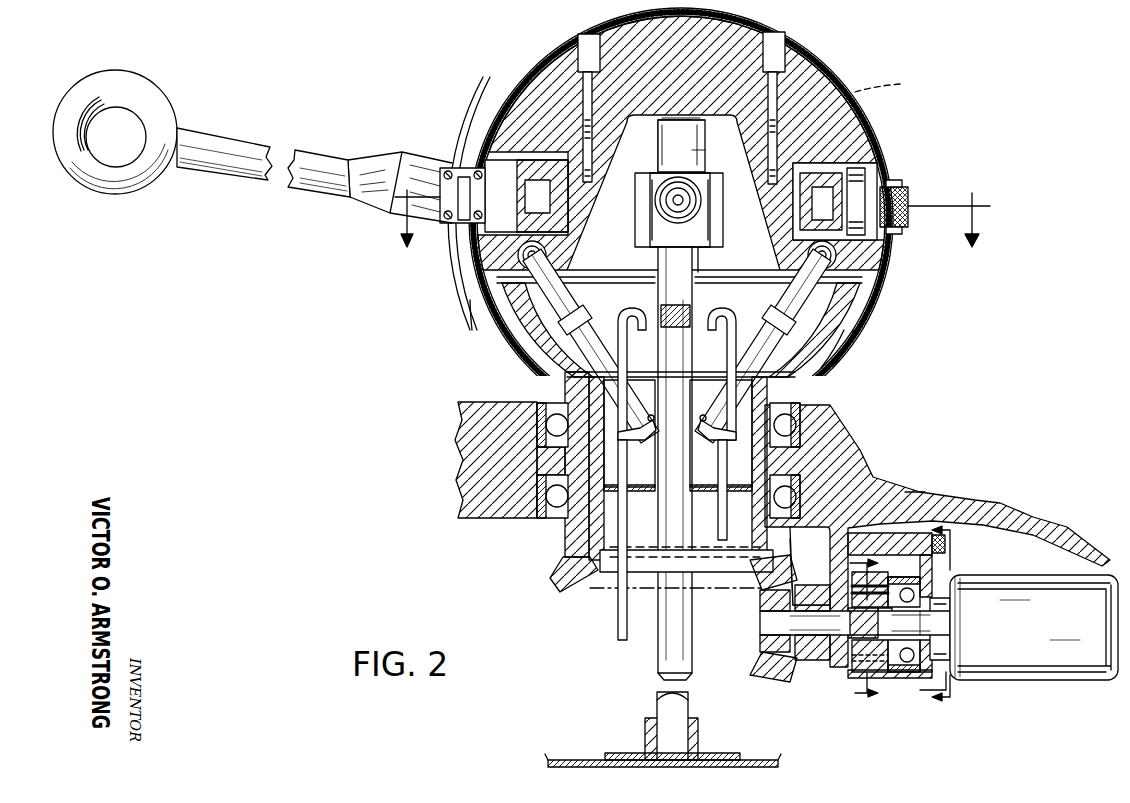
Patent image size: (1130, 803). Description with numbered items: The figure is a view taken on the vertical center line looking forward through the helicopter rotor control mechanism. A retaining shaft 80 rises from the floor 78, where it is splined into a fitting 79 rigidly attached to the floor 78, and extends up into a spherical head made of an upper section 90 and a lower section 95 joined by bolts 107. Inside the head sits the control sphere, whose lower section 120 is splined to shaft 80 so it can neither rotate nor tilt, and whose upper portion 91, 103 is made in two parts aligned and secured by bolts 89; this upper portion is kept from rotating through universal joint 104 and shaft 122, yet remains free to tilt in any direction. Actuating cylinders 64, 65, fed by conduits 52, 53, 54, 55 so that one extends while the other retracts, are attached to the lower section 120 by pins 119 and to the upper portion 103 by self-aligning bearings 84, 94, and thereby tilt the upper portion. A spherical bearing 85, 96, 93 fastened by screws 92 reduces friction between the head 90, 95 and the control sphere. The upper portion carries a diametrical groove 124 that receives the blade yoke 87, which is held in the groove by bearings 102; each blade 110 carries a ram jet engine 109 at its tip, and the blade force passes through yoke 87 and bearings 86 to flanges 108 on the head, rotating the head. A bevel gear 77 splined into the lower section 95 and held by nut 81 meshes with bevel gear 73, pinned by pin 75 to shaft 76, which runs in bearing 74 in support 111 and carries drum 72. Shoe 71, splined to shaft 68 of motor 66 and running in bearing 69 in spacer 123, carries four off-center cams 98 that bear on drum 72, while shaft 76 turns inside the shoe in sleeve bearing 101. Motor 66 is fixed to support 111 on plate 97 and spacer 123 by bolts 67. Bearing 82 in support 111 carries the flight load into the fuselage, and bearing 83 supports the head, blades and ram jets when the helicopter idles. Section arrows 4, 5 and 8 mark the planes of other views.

The section line 4-4 (gear) 4 is at (869, 636).
The section line 5- 5 is at (948, 616).
The section line 8- 8 is at (692, 218).
The conduit 52 is at (618, 446).
The conduit 53 is at (640, 306).
The conduit 54 is at (738, 308).
The conduit 55 is at (724, 470).
The actuating cylinder 64 is at (596, 308).
The actuating cylinder 65 is at (788, 318).
The motor 66 is at (1068, 680).
The bolts 67 is at (950, 500).
The motor shaft 68 is at (950, 630).
The bearing 69 is at (896, 690).
The shoe 71 is at (882, 690).
The drum 72 is at (853, 680).
The bevel gear 73 is at (778, 668).
The bearing 74 is at (822, 648).
The pin 75 is at (812, 600).
The shaft 76 is at (760, 625).
The bevel gear 77 is at (565, 575).
The floor 78 is at (588, 758).
The fitting 79 is at (642, 728).
The retaining shaft 80 is at (690, 638).
The nut 81 is at (566, 548).
The bearing 82 is at (538, 520).
The bearing 83 is at (548, 403).
The self aligning bearing 84 is at (470, 298).
The spherical bearing 85 is at (866, 248).
The bearings 86 is at (500, 228).
The blade yoke 87 is at (398, 210).
The bolts 89 is at (578, 48).
The upper section of spherical head 90 is at (842, 82).
The upper section of control sphere 91 is at (855, 150).
The screws 92 is at (886, 79).
The spherical bearing 93 is at (856, 122).
The self aligning bearing 94 is at (862, 280).
The lower section of spherical head 95 is at (845, 327).
The spherical bearing 96 is at (840, 346).
The plate 97 is at (943, 692).
The off center cams 98 is at (945, 553).
The sleeve bearing 101 is at (945, 604).
The bearing 102 is at (868, 222).
The upper portion of control sphere 103 is at (718, 258).
The universal joint 104 is at (712, 210).
The bolts 107 is at (898, 186).
The flanges 108 is at (476, 110).
The ram jet engine 109 is at (138, 195).
The blade 110 is at (231, 185).
The support 111 is at (475, 520).
The pins 119 is at (673, 540).
The lower section of control sphere 120 is at (522, 342).
The shaft 122 is at (702, 120).
The spacer 123 is at (912, 678).
The diametrical groove 124 is at (456, 168).